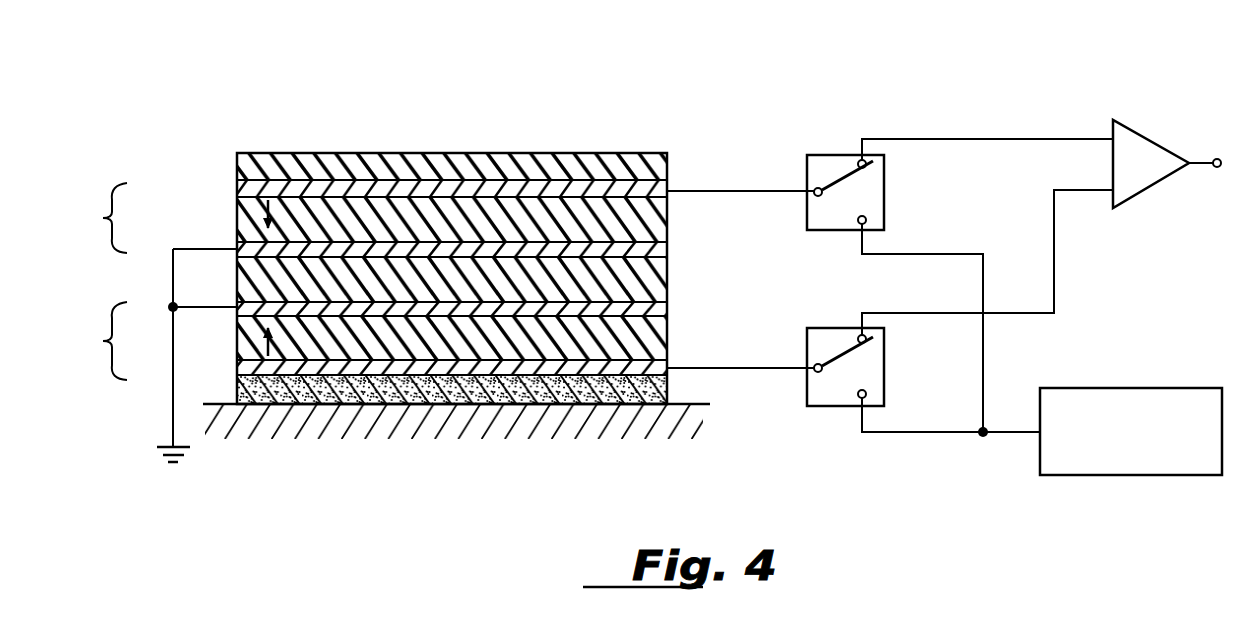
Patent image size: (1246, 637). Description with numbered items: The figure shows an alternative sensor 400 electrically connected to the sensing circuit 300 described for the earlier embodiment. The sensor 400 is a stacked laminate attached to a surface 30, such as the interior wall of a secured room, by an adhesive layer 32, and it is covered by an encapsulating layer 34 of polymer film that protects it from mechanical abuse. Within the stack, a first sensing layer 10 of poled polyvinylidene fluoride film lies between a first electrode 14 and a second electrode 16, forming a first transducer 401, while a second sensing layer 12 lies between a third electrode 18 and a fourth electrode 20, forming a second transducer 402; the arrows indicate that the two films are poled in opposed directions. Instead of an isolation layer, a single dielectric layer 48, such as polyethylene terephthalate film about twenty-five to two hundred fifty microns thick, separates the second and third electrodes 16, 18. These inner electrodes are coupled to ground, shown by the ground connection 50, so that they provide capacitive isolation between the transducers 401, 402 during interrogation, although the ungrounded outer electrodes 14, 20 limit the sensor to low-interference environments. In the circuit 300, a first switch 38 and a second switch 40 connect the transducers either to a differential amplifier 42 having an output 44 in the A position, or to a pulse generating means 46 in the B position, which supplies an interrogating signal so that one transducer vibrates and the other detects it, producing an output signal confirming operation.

The sensor 400 is at (457, 220).
The sensing circuit 300 is at (946, 271).
The encapsulating layer 34 is at (237, 160).
The first electrode 14 is at (237, 192).
The first sensing layer 10 is at (248, 218).
The second electrode 16 is at (658, 250).
The dielectric layer 48 is at (660, 285).
The third electrode 18 is at (660, 310).
The second sensing layer 12 is at (660, 340).
The fourth electrode 20 is at (237, 365).
The adhesive layer 32 is at (237, 387).
The surface 30 is at (378, 450).
The first transducer 401 is at (97, 218).
The second transducer 402 is at (98, 341).
The ground connection 50 is at (165, 387).
The first switch 38 is at (821, 155).
The second switch 40 is at (826, 328).
The differential amplifier 42 is at (1146, 146).
The output 44 is at (1215, 167).
The pulse generating means 46 is at (1052, 457).